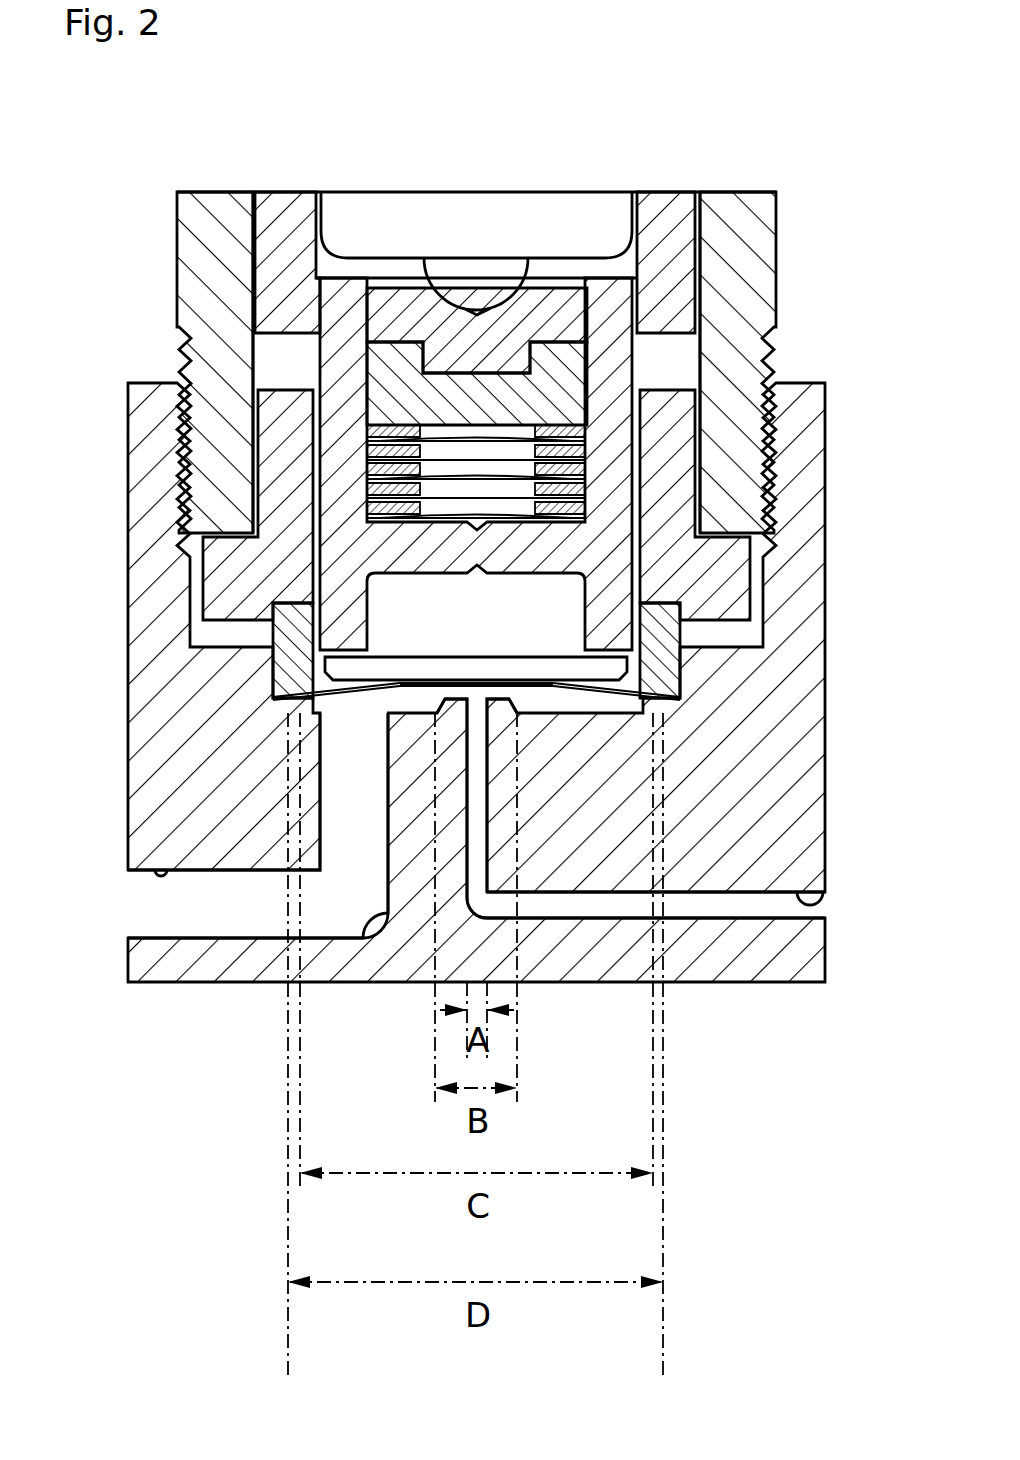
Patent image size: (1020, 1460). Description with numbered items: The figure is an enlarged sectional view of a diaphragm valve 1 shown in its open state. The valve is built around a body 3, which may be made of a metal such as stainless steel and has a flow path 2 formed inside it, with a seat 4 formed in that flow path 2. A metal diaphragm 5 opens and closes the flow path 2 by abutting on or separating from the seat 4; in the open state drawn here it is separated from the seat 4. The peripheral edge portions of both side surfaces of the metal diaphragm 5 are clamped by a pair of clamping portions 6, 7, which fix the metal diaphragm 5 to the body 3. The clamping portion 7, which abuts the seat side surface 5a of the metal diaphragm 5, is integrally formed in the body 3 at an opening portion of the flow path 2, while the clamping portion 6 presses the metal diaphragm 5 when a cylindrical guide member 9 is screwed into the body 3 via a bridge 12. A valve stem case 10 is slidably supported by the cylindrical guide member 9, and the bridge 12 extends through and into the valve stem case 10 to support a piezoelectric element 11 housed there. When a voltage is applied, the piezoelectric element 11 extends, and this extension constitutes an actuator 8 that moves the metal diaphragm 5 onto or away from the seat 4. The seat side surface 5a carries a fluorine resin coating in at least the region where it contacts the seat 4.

The diaphragm valve 1 is at (828, 220).
The flow path 2 is at (160, 885).
The body 3 is at (176, 382).
The seat 4 is at (440, 712).
The metal diaphragm 5 is at (300, 672).
The seat side surface 5a is at (340, 700).
The clamping portion 6 is at (290, 632).
The clamping portion 7 is at (318, 700).
The actuator 8 is at (645, 380).
The cylindrical guide member 9 is at (182, 240).
The valve stem case 10 is at (660, 213).
The piezoelectric element 11 is at (525, 222).
The bridge 12 is at (230, 560).